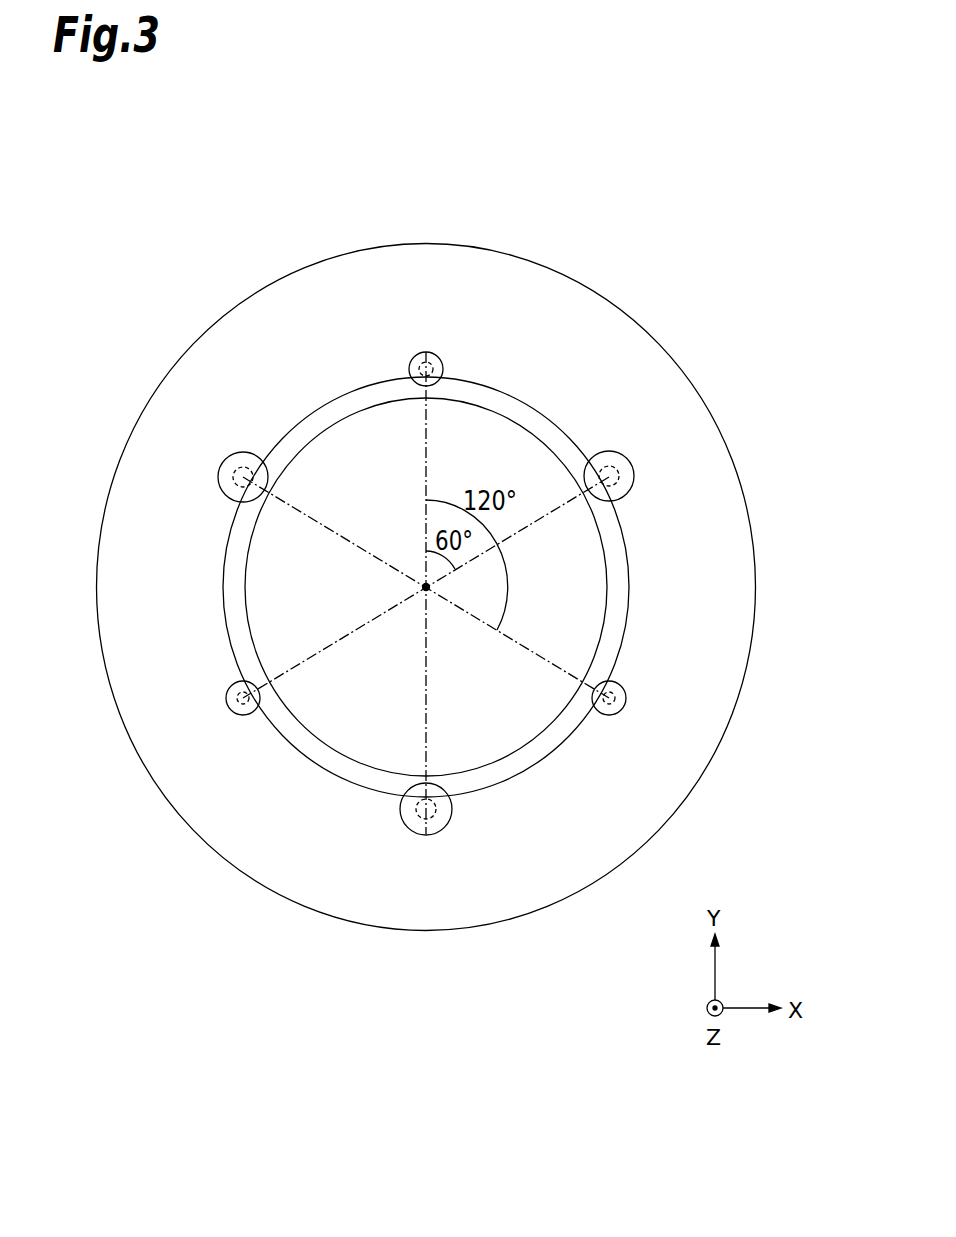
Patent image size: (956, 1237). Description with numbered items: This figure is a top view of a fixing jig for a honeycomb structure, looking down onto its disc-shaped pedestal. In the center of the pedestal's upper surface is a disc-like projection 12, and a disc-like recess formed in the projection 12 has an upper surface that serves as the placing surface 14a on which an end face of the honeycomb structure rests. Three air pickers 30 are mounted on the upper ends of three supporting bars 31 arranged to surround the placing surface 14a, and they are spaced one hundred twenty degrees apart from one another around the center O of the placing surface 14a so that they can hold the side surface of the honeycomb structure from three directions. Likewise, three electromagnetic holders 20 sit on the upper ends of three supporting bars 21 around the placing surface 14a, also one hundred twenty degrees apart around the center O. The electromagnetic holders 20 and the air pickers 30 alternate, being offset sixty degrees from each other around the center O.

The projection 12 is at (628, 592).
The placing surface 14a is at (507, 414).
The electromagnetic holder 20 is at (217, 478).
The supporting bar 21 is at (228, 455).
The air picker 30 is at (443, 362).
The supporting bar 31 is at (433, 352).
The center O is at (426, 587).